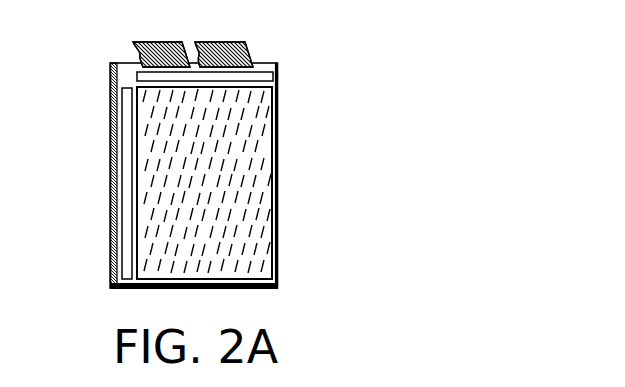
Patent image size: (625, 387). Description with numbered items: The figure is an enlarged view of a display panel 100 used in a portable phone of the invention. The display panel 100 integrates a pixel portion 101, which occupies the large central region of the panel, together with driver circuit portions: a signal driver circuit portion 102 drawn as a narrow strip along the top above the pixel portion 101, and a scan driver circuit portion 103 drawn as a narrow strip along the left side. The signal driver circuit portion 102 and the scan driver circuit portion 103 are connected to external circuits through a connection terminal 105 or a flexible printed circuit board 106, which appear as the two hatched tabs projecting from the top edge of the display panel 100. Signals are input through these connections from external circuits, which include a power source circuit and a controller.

The display panel 100 is at (115, 64).
The pixel portion 101 is at (272, 220).
The signal driver circuit portion 102 is at (268, 75).
The scan driver circuit portion 103 is at (123, 203).
The connection terminal 105 is at (251, 62).
The FPC board 106 is at (227, 42).